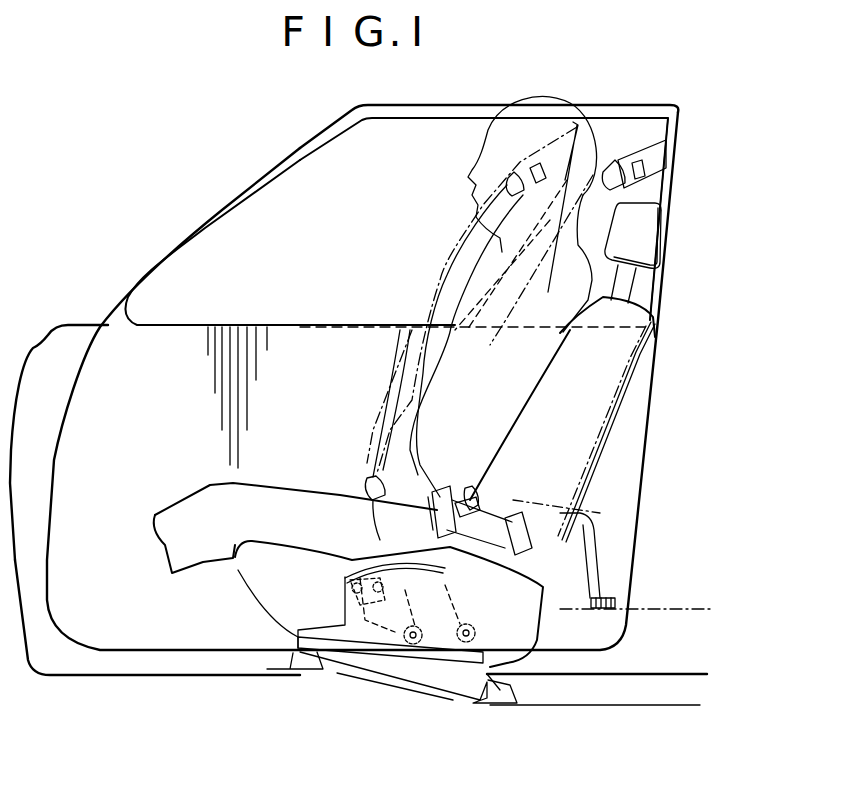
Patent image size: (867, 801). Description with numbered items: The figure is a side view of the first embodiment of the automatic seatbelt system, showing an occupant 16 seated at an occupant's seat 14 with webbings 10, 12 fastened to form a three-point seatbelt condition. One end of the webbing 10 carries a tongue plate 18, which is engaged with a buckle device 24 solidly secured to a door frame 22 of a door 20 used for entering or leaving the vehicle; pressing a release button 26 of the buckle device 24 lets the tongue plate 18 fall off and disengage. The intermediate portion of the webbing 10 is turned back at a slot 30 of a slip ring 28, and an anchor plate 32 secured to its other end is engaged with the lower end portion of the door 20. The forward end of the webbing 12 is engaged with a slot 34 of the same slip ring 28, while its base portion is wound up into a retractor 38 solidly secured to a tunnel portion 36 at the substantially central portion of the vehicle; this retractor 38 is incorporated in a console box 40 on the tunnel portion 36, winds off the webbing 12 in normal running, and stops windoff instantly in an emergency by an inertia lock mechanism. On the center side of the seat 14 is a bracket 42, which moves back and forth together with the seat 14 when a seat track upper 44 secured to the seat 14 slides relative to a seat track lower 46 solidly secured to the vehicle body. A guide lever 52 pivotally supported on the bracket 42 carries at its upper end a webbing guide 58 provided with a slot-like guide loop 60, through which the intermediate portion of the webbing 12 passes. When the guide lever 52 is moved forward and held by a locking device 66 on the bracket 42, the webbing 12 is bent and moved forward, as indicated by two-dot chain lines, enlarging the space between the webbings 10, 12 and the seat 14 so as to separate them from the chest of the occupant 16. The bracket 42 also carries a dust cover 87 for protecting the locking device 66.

The webbing 10 is at (470, 240).
The webbing 12 is at (497, 537).
The occupant's seat 14 is at (541, 382).
The occupant 16 is at (492, 300).
The tongue plate 18 is at (619, 178).
The door 20 is at (313, 337).
The door frame 22 is at (668, 183).
The buckle device 24 is at (653, 158).
The release button 26 is at (642, 178).
The slip ring 28 is at (454, 488).
The slot 30 is at (441, 470).
The anchor plate 32 is at (475, 635).
The slot 34 is at (470, 513).
The tunnel portion 36 is at (663, 606).
The retractor 38 is at (574, 557).
The console box 40 is at (558, 512).
The bracket 42 is at (460, 600).
The seat track upper 44 is at (533, 658).
The seat track lower 46 is at (505, 683).
The guide lever 52 is at (372, 552).
The webbing guide 58 is at (368, 470).
The guide loop 60 is at (480, 494).
The locking device 66 is at (352, 613).
The dust cover 87 is at (343, 595).